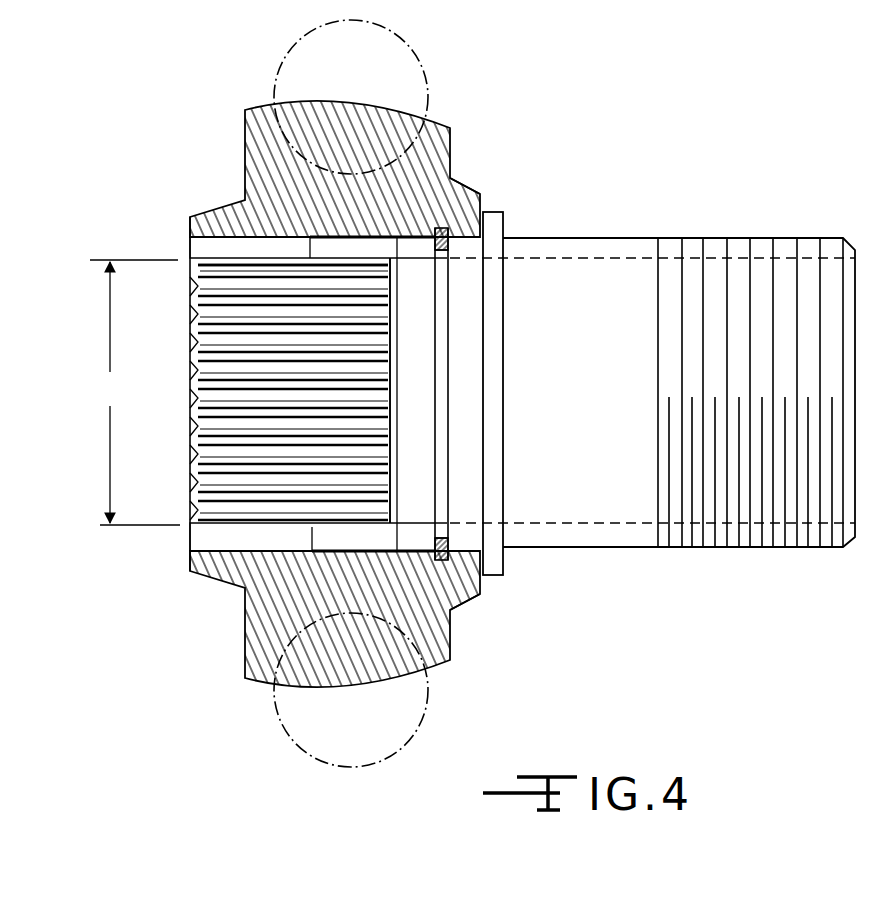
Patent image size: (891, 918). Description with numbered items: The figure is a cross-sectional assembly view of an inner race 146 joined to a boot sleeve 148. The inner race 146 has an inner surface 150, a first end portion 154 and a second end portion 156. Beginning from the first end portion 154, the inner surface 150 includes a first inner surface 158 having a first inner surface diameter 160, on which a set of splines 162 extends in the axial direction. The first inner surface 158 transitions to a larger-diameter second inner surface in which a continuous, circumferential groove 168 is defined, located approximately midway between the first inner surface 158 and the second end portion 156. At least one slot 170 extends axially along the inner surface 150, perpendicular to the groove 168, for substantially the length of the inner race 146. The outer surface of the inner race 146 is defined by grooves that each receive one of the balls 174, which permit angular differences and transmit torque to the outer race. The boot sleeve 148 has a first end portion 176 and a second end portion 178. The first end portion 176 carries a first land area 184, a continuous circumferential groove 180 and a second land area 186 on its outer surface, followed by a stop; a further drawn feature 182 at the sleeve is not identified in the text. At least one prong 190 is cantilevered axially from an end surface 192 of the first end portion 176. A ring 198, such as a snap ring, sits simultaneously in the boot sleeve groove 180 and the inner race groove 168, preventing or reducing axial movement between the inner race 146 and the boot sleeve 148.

The inner race 146 is at (433, 146).
The boot sleeve 148 is at (650, 238).
The inner surface 150 is at (214, 245).
The first end portion 154 is at (208, 151).
The second end portion 156 is at (459, 162).
The first inner surface 158 is at (228, 445).
The first inner surface diameter 160 is at (133, 392).
The set of splines 162 is at (241, 317).
The groove 168 is at (441, 229).
The slot 170 is at (373, 235).
The ball 174 is at (403, 34).
The first end portion 176 is at (462, 560).
The second end portion 178 is at (729, 552).
The groove 180 is at (443, 253).
The flange 182 is at (537, 238).
The first land area 184 is at (415, 552).
The second land area 186 is at (458, 551).
The prong 190 is at (313, 247).
The end surface 192 is at (395, 373).
The ring 198 is at (450, 243).